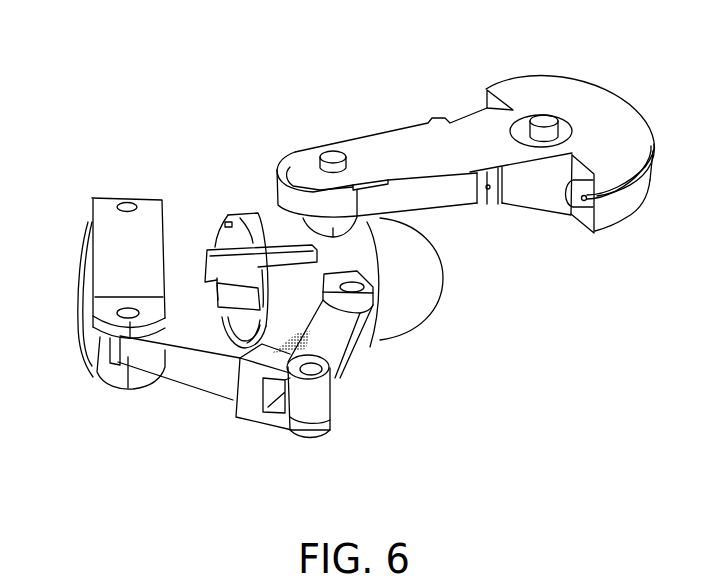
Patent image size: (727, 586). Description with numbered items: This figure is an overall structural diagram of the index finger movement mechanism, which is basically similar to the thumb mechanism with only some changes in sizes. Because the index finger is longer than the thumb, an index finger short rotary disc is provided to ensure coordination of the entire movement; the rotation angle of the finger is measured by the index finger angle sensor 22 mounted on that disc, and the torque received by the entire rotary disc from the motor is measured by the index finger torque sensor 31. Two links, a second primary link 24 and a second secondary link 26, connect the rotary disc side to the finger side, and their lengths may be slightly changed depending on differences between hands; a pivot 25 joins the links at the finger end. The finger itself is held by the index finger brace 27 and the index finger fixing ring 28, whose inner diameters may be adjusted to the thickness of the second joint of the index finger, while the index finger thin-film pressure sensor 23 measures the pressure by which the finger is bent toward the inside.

The index finger angle sensor 22 is at (313, 170).
The index finger thin-film pressure sensor 23 is at (217, 270).
The second primary link 24 is at (350, 356).
The pivot 25 is at (302, 348).
The second secondary link 26 is at (233, 387).
The index finger brace 27 is at (105, 377).
The index finger fixing ring 28 is at (88, 259).
The index finger torque sensor 31 is at (542, 120).